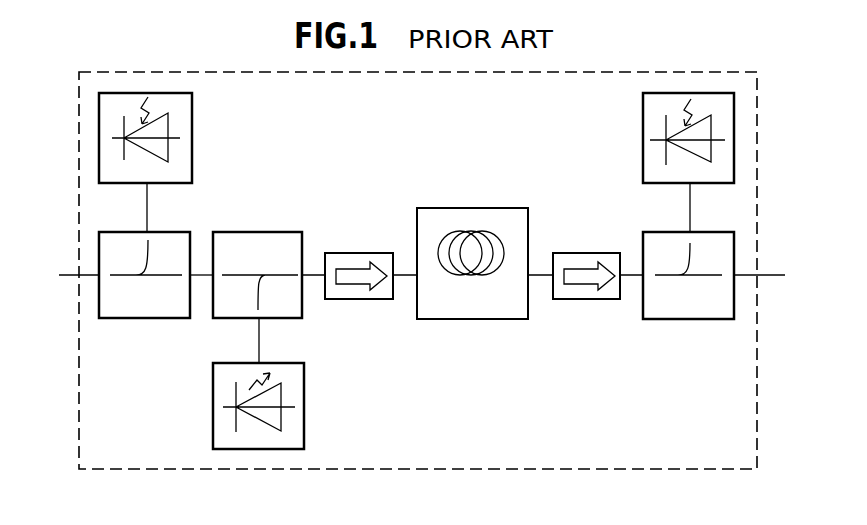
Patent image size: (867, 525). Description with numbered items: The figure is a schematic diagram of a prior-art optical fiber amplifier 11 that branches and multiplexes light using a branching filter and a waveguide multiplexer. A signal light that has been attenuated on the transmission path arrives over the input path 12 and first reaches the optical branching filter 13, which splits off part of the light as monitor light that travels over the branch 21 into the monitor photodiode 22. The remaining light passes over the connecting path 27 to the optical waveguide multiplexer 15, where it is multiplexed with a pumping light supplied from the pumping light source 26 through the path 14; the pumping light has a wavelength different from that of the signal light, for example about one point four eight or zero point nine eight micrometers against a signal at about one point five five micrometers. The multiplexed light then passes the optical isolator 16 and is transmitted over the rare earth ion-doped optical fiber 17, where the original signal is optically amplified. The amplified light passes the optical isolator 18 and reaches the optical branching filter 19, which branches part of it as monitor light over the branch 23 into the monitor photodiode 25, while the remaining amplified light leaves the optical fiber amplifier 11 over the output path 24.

The optical fiber amplifier 11 is at (79, 420).
The input optical fiber 12 is at (66, 247).
The optical branching filter 13 is at (158, 318).
The pump light fiber 14 is at (259, 343).
The optical waveguide multiplexer 15 is at (250, 232).
The optical isolator 16 is at (355, 253).
The rare earth ion-doped optical fiber 17 is at (472, 208).
The optical isolator 18 is at (582, 253).
The optical branching filter 19 is at (700, 319).
The input monitor branch fiber 21 is at (147, 207).
The monitor photodiode 22 is at (192, 156).
The output monitor branch fiber 23 is at (690, 207).
The output optical fiber 24 is at (797, 252).
The monitor photodiode 25 is at (643, 131).
The pumping light source 26 is at (304, 428).
The connecting optical fiber 27 is at (197, 277).